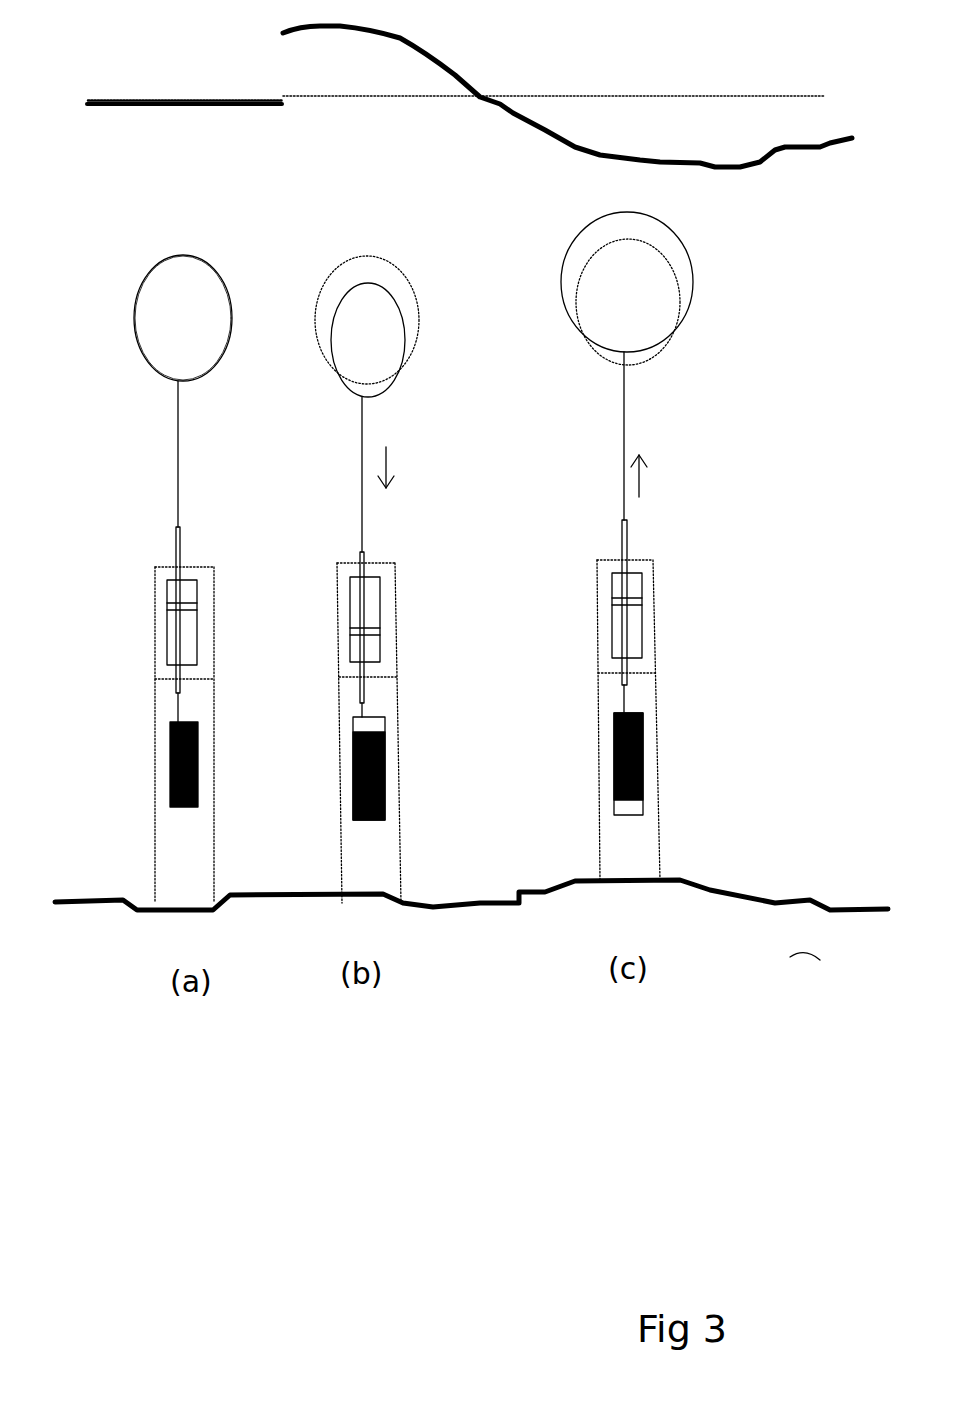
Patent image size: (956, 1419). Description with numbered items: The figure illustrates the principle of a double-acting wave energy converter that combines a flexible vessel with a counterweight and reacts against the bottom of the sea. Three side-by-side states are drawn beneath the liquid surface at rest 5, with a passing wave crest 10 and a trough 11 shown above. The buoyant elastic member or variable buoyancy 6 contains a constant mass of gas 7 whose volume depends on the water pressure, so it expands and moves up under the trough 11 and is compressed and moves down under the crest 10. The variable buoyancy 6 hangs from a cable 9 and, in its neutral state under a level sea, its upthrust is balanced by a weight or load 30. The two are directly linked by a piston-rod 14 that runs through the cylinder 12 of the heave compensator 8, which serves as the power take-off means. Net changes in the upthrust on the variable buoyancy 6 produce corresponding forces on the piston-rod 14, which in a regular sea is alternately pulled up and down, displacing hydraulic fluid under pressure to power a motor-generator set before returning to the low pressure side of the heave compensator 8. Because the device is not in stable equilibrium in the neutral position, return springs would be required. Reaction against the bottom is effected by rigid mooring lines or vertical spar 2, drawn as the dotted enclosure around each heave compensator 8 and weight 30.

The rigid mooring lines or vertical spar 2 is at (155, 720).
The liquid surface at rest 5 is at (122, 101).
The variable buoyancy 6 is at (147, 272).
The constant mass of gas 7 is at (157, 318).
The heave compensator 8 is at (173, 715).
The cable 9 is at (624, 418).
The wave crest 10 is at (357, 30).
The trough 11 is at (657, 163).
The cylinder 12 is at (197, 582).
The piston-rod 14 is at (197, 610).
The weight or load 30 is at (198, 773).